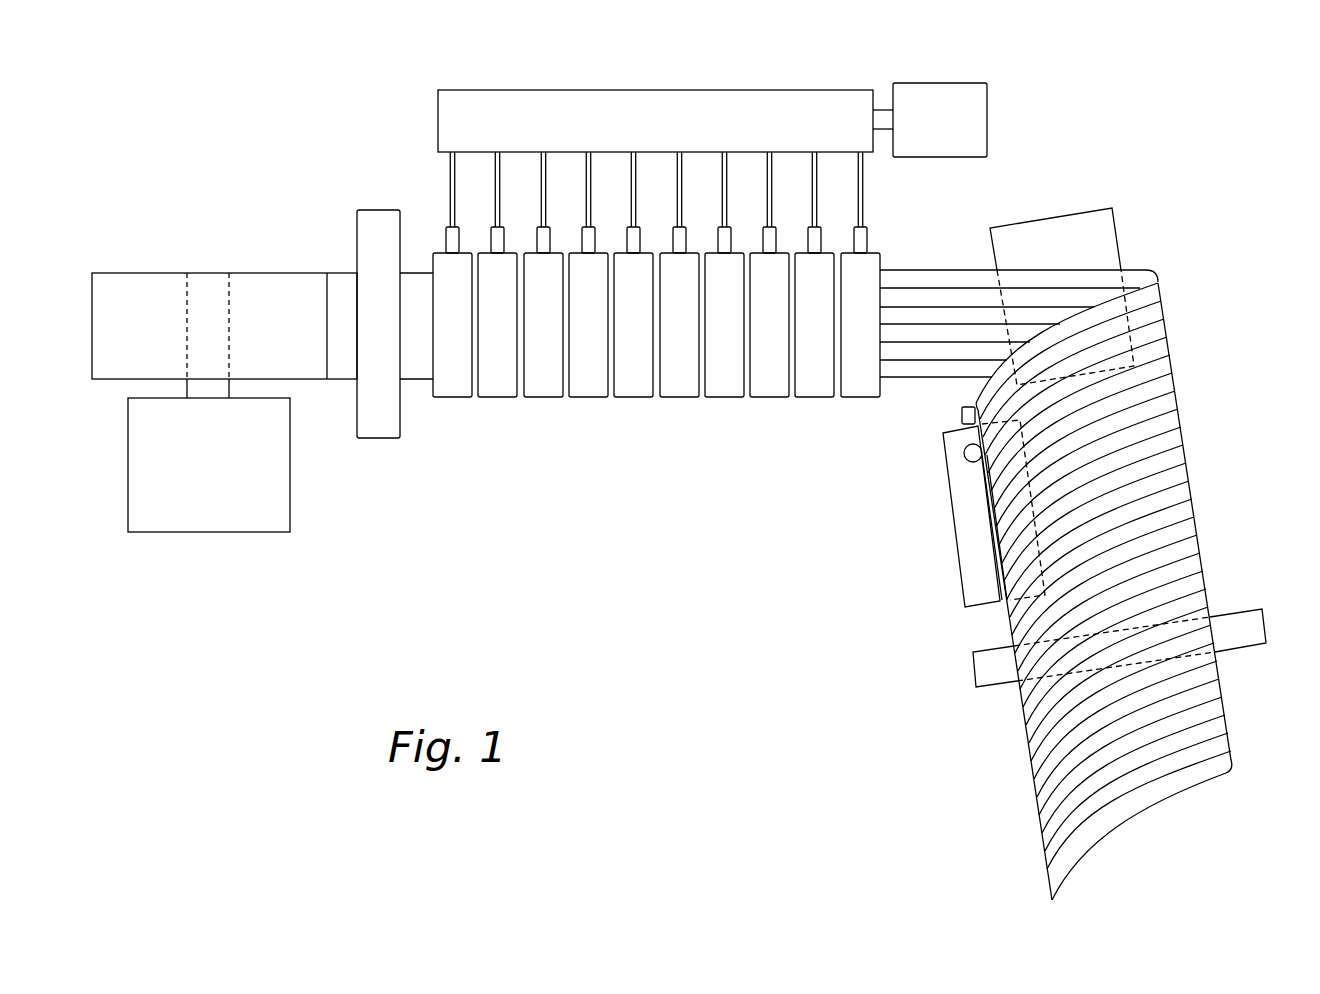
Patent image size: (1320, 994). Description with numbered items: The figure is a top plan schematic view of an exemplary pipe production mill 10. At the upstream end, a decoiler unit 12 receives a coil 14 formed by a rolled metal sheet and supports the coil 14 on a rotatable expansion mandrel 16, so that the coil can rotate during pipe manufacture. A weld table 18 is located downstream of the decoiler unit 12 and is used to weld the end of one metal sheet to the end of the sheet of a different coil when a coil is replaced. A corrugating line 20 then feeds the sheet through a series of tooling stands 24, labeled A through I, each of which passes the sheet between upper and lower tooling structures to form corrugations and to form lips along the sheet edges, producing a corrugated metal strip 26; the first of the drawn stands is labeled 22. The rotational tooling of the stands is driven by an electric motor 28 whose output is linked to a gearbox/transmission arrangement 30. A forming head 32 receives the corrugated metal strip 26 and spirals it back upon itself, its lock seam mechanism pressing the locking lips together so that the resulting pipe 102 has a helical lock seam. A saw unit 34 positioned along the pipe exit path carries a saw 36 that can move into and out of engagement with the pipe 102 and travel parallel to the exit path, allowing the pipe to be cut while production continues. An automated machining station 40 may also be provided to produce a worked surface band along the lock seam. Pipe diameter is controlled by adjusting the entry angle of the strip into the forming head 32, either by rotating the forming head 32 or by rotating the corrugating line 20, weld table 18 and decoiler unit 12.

The pipe production mill 10 is at (318, 164).
The decoiler unit 12 is at (181, 534).
The coil 14 is at (92, 323).
The rotatable expansion mandrel 16 is at (188, 332).
The weld table 18 is at (383, 210).
The corrugating line 20 is at (550, 462).
The first print cartridge 22 is at (448, 398).
The tooling stands 24 is at (478, 408).
The corrugated metal strip 26 is at (943, 270).
The electric motor 28 is at (948, 83).
The gearbox/transmission arrangement 30 is at (608, 90).
The forming head 32 is at (1120, 232).
The saw unit 34 is at (957, 543).
The saw 36 is at (963, 457).
The automated machining station 40 is at (957, 412).
The pipe 102 is at (1200, 460).